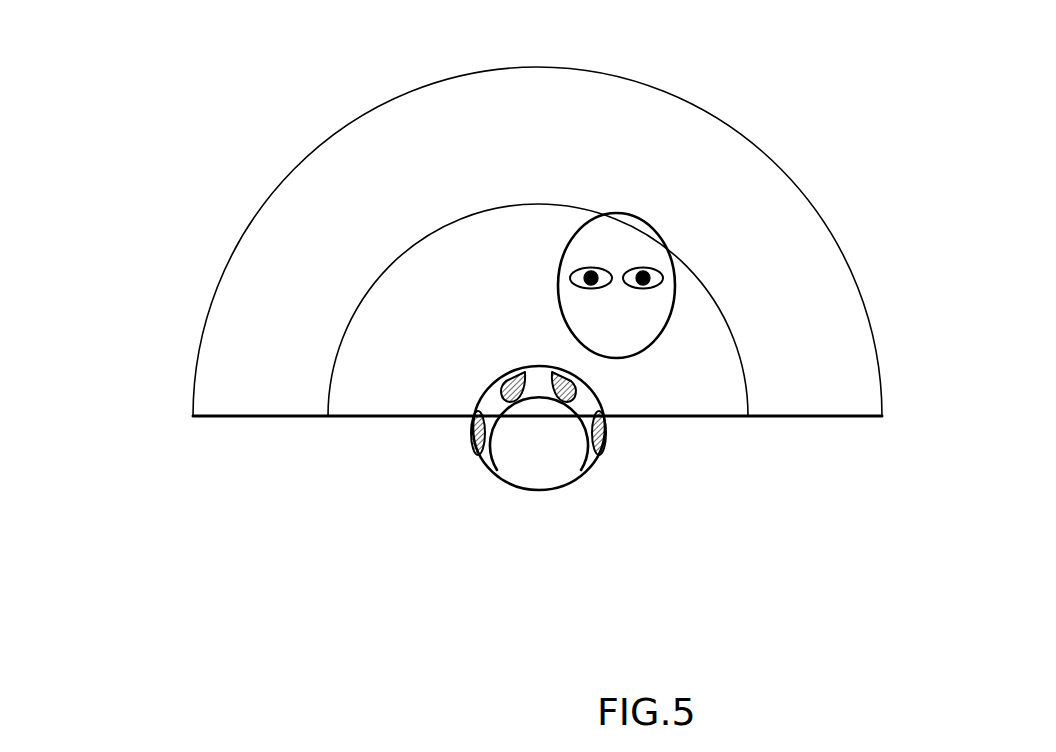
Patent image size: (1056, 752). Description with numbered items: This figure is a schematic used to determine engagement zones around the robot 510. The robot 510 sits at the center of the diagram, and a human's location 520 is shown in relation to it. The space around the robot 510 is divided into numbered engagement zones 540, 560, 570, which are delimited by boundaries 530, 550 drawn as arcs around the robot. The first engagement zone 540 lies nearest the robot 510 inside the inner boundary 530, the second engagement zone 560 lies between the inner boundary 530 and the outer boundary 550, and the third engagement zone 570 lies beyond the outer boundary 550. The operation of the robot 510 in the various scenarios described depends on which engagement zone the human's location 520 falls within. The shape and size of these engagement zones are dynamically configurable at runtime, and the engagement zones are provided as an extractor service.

The robot 510 is at (488, 468).
The human's location 520 is at (650, 223).
The boundary 530 is at (745, 413).
The engagement zone 540 is at (672, 395).
The boundary 550 is at (882, 416).
The engagement zone 560 is at (813, 385).
The engagement zone 570 is at (970, 348).